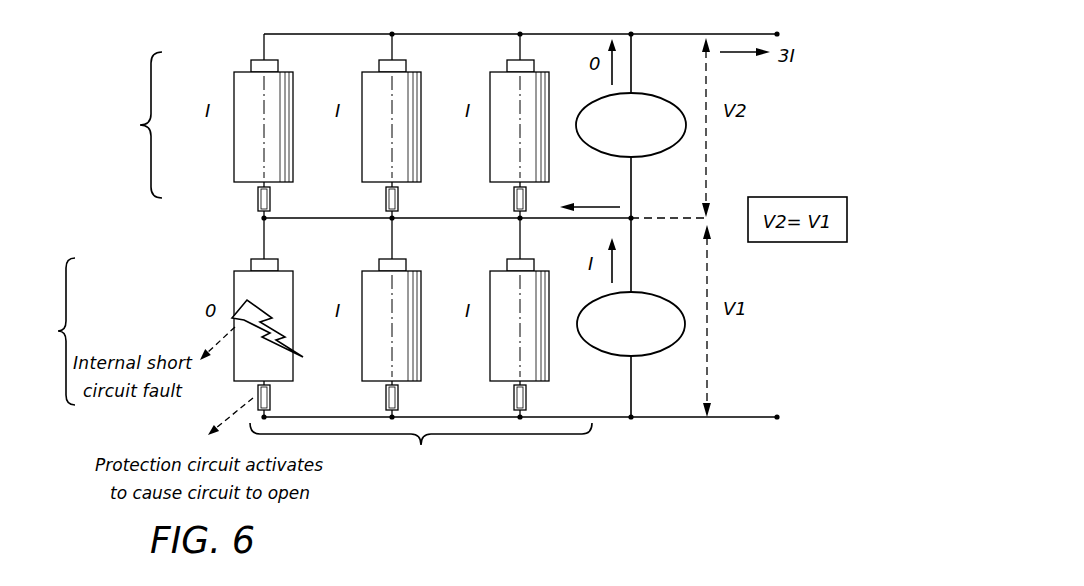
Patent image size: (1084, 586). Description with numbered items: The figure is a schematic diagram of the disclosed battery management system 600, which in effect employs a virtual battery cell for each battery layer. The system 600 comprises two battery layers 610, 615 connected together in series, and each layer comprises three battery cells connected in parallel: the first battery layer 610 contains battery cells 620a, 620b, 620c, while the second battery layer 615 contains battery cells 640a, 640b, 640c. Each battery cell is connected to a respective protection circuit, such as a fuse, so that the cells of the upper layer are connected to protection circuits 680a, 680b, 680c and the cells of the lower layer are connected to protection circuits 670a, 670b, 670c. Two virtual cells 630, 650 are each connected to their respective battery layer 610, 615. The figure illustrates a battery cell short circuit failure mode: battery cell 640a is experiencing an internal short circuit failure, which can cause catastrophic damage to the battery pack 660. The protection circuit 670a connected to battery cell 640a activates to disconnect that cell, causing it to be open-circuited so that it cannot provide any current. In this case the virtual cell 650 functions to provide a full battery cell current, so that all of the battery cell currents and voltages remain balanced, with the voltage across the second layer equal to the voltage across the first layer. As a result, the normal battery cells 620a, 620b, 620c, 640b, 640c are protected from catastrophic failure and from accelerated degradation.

The battery management system 600 is at (645, 450).
The battery layer 610 is at (132, 125).
The battery layer 615 is at (44, 331).
The battery cell 620a is at (234, 75).
The battery cell 620b is at (422, 98).
The battery cell 620c is at (550, 97).
The virtual cell 630 is at (673, 145).
The battery cell 640a is at (292, 296).
The battery cell 640b is at (422, 298).
The battery cell 640c is at (550, 296).
The virtual cell 650 is at (673, 343).
The battery pack 660 is at (421, 449).
The protection circuit 670a is at (258, 392).
The protection circuit 670b is at (386, 398).
The protection circuit 670c is at (514, 398).
The protection circuit 680a is at (258, 200).
The protection circuit 680b is at (386, 200).
The protection circuit 680c is at (514, 200).